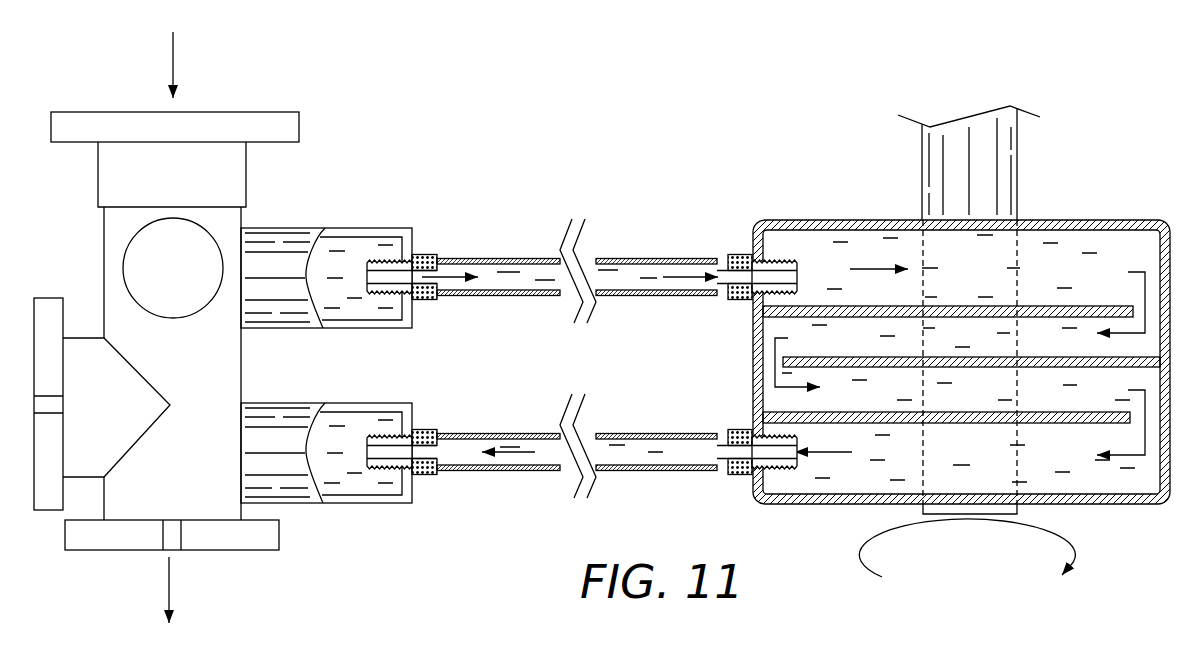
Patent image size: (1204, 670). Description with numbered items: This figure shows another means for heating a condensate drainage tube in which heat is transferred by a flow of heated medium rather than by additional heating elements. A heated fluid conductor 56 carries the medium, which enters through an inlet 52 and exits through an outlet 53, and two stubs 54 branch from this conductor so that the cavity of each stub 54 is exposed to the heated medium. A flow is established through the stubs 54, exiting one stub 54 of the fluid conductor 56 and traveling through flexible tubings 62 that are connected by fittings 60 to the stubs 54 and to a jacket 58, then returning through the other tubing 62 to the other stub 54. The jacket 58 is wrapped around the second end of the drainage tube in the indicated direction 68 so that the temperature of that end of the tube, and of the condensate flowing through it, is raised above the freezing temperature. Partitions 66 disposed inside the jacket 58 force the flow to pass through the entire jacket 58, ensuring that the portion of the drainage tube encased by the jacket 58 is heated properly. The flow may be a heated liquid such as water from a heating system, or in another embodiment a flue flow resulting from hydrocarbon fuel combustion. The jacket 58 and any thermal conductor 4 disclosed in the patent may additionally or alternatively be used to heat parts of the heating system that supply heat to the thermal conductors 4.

The thermal conductor 4 is at (1017, 143).
The inlet 52 is at (180, 112).
The outlet 53 is at (150, 550).
The stub 54 is at (128, 247).
The heated fluid conductor 56 is at (241, 355).
The jacket 58 is at (877, 220).
The fitting 60 is at (425, 254).
The tubing 62 is at (650, 258).
The partition 66 is at (1082, 306).
The direction 68 is at (1032, 530).